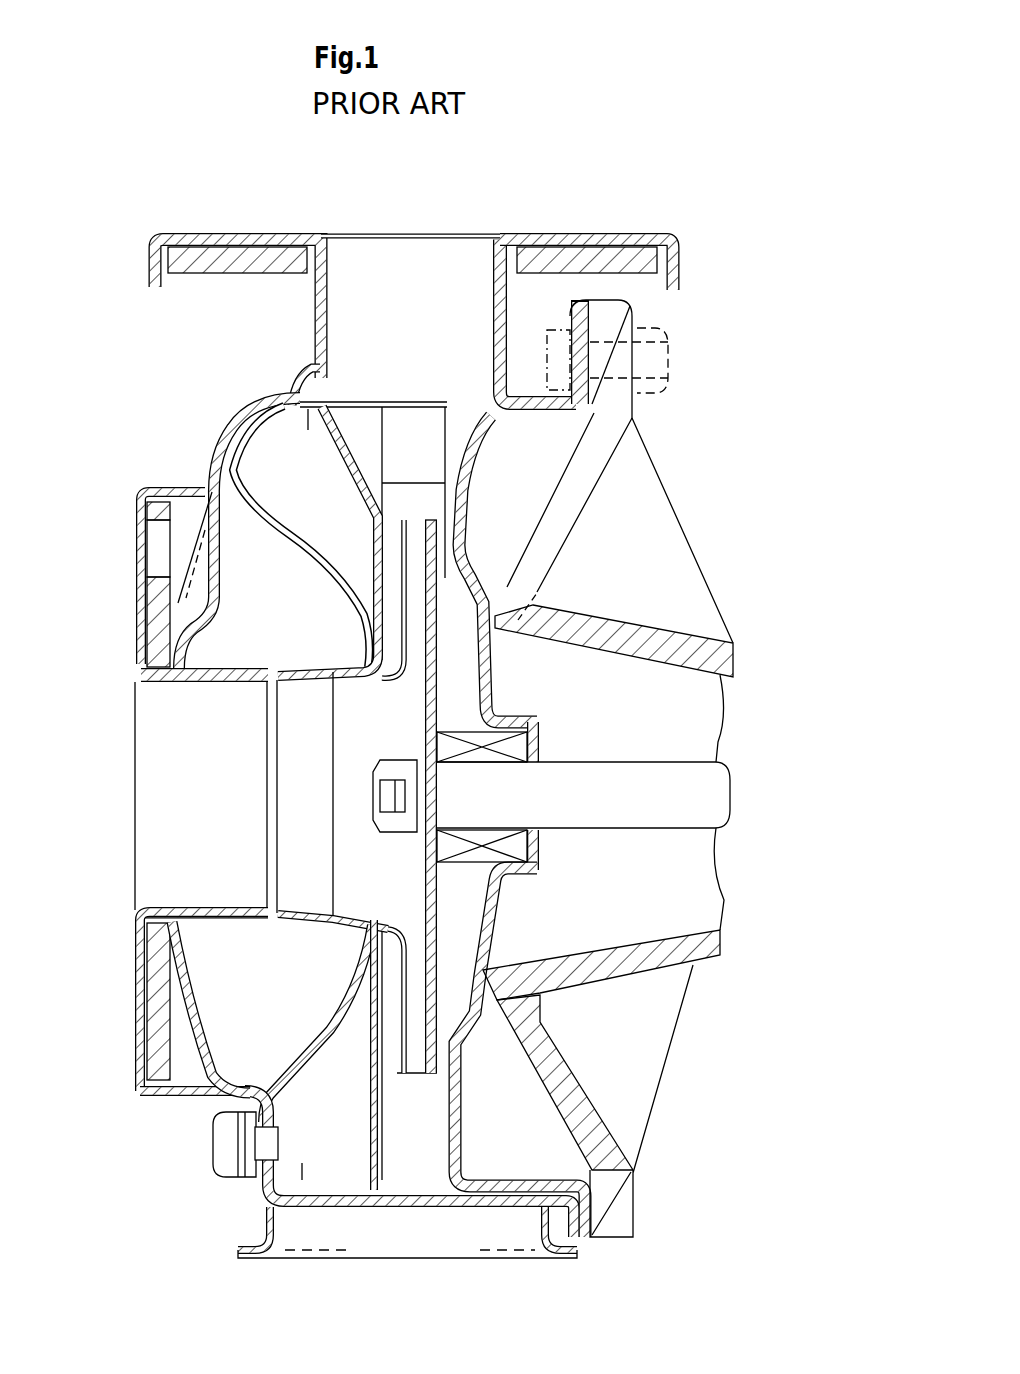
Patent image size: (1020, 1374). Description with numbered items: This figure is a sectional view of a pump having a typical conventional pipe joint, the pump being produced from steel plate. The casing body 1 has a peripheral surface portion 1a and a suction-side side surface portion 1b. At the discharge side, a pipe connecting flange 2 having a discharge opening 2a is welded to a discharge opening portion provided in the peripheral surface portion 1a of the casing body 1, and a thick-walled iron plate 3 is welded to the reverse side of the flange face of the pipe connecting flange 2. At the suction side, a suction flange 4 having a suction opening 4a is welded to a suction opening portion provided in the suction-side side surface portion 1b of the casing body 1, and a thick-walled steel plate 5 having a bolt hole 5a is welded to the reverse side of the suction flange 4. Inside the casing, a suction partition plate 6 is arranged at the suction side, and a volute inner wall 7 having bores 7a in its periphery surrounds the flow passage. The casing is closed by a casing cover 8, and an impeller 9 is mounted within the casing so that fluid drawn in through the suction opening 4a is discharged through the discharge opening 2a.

The casing body 1 is at (145, 1084).
The peripheral surface portion 1a is at (292, 384).
The suction-side side surface portion 1b is at (170, 1010).
The pipe connecting flange 2 is at (258, 233).
The discharge opening 2a is at (440, 234).
The thick-walled iron plate 3 is at (575, 255).
The suction flange 4 is at (140, 965).
The suction opening 4a is at (135, 880).
The thick-walled steel plate 5 is at (160, 634).
The bolt hole 5a is at (153, 573).
The suction partition plate 6 is at (345, 592).
The volute inner wall 7 is at (372, 1082).
The bores 7a is at (346, 427).
The casing cover 8 is at (503, 682).
The impeller 9 is at (438, 610).